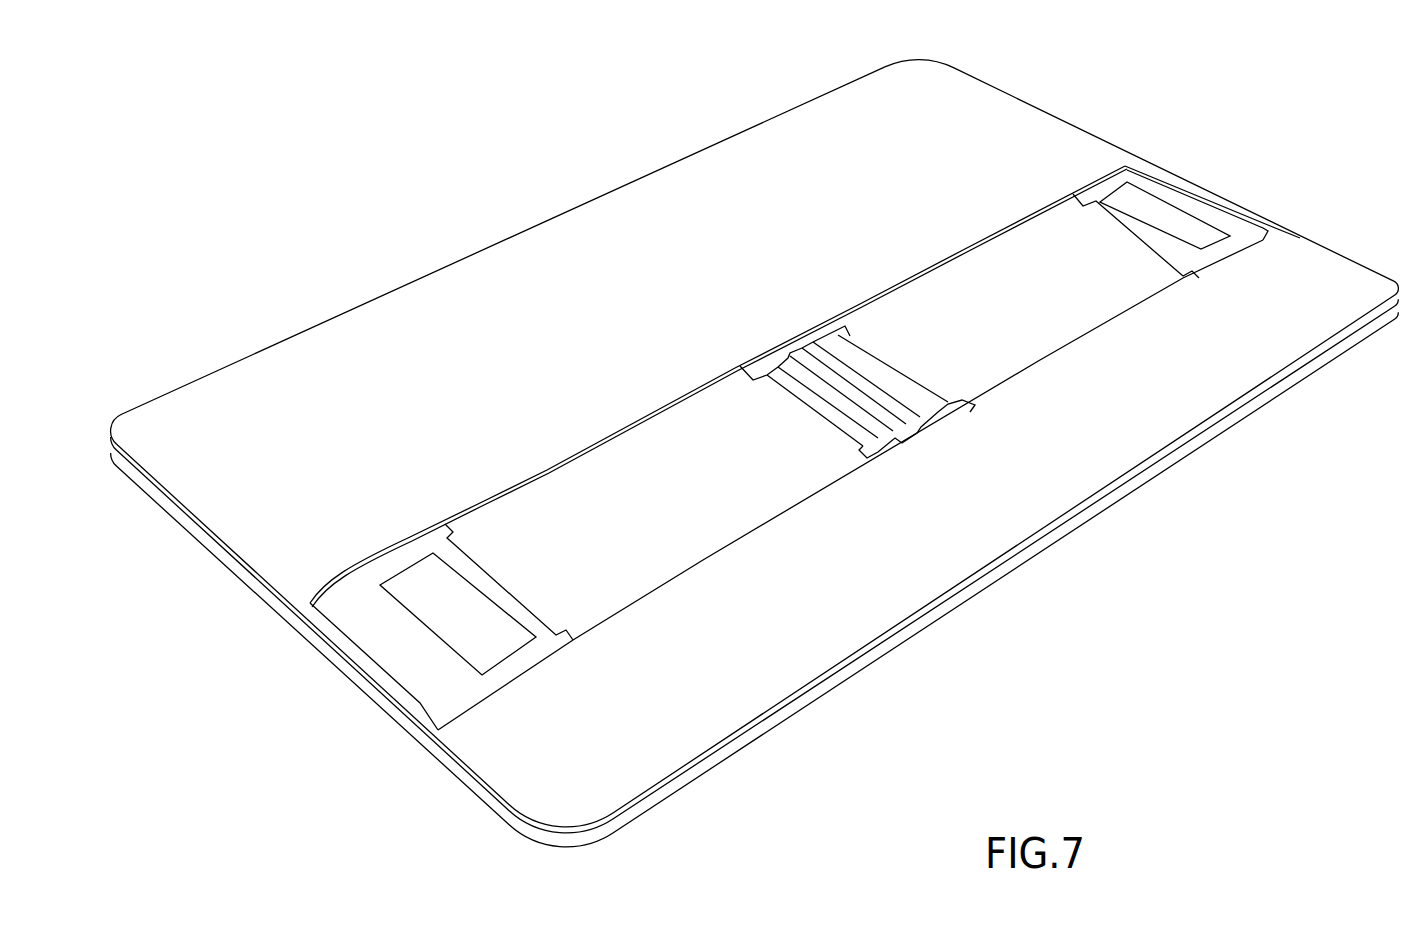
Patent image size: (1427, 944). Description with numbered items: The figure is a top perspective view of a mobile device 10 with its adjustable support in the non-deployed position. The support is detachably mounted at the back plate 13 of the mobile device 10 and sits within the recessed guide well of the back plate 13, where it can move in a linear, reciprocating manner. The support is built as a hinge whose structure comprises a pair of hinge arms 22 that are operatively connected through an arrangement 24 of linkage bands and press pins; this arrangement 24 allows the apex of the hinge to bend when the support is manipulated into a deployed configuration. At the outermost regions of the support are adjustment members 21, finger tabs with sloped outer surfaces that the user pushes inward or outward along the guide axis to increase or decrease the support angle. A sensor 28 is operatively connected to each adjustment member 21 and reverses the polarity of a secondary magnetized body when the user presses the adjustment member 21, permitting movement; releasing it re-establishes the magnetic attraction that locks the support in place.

The mobile device 10 is at (318, 156).
The back plate 13 is at (275, 527).
The adjustment members 21 is at (380, 618).
The hinge arms 22 is at (1062, 307).
The arrangement of linkage bands and press pins 24 is at (917, 422).
The sensor 28 is at (483, 640).